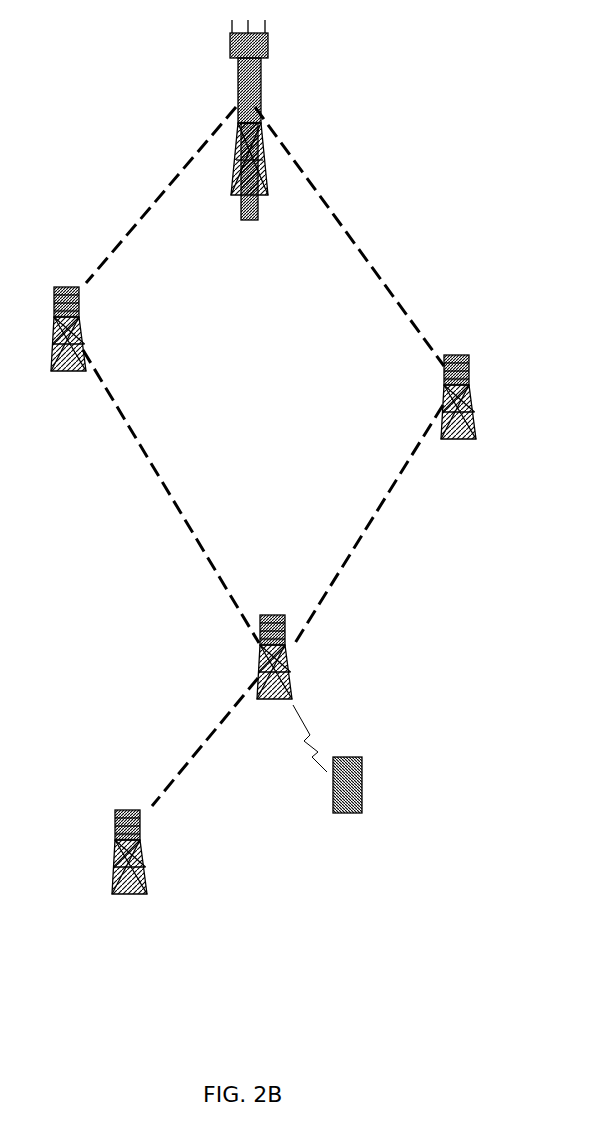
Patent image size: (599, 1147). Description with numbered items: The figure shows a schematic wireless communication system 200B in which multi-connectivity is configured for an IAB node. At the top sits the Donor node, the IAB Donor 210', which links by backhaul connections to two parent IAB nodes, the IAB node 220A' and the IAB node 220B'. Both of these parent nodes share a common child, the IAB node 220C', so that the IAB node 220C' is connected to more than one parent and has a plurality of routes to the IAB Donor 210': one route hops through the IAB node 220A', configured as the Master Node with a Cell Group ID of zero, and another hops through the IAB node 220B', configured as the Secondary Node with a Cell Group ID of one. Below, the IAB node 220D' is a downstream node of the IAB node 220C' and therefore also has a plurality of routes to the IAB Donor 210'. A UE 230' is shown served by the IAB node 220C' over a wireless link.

The wireless communication system 200B is at (145, 125).
The IAB Donor 210' is at (255, 135).
The IAB node 220A' is at (66, 348).
The IAB node 220B' is at (470, 415).
The IAB node 220C' is at (264, 677).
The IAB node 220D' is at (134, 870).
The UE 230' is at (335, 775).